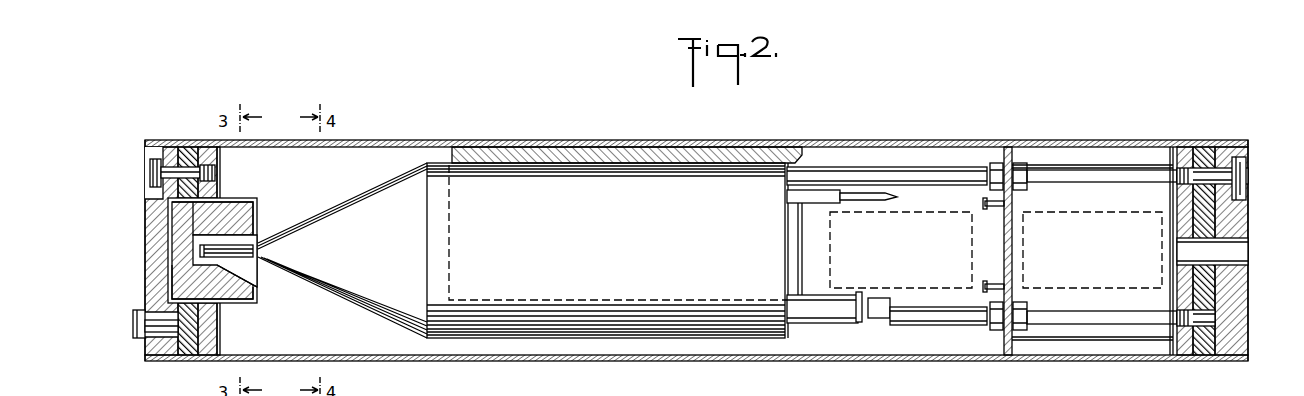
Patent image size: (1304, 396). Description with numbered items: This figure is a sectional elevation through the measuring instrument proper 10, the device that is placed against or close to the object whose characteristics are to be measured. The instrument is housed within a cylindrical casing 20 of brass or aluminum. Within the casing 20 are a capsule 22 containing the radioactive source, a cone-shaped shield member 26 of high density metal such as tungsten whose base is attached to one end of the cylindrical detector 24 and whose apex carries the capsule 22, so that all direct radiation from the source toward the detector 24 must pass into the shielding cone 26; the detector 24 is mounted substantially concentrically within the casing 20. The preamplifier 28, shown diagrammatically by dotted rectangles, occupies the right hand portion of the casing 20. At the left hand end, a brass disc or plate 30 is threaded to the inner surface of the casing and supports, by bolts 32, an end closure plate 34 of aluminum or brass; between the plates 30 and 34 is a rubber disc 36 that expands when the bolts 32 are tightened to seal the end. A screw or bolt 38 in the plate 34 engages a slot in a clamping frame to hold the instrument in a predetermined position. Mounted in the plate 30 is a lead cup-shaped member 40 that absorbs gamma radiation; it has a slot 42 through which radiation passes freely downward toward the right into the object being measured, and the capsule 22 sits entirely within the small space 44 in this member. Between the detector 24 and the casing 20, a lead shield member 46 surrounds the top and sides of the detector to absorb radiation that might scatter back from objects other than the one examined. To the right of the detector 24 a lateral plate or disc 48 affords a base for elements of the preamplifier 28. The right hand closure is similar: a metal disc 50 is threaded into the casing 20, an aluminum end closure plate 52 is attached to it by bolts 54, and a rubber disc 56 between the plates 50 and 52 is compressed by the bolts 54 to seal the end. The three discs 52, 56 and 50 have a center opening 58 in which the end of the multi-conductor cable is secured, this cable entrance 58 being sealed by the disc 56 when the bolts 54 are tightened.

The apparatus 10 is at (851, 368).
The cylindrical casing 20 is at (665, 142).
The capsule 22 is at (248, 266).
The detector 24 is at (633, 340).
The shield member 26 is at (389, 255).
The preamplifier 28 is at (996, 250).
The disc or plate 30 is at (217, 188).
The bolts 32 is at (148, 172).
The end closure plate 34 is at (147, 206).
The disc 36 is at (182, 148).
The screw or bolt 38 is at (144, 312).
The cup-shaped member 40 is at (208, 253).
The slot 42 is at (258, 283).
The small space 44 is at (253, 226).
The shield member 46 is at (572, 152).
The lateral plate or disc 48 is at (1010, 148).
The metal disc or plate 50 is at (1182, 148).
The end closure plate 52 is at (1232, 218).
The bolts 54 is at (1236, 150).
The disc 56 is at (1206, 148).
The center opening 58 is at (1238, 255).